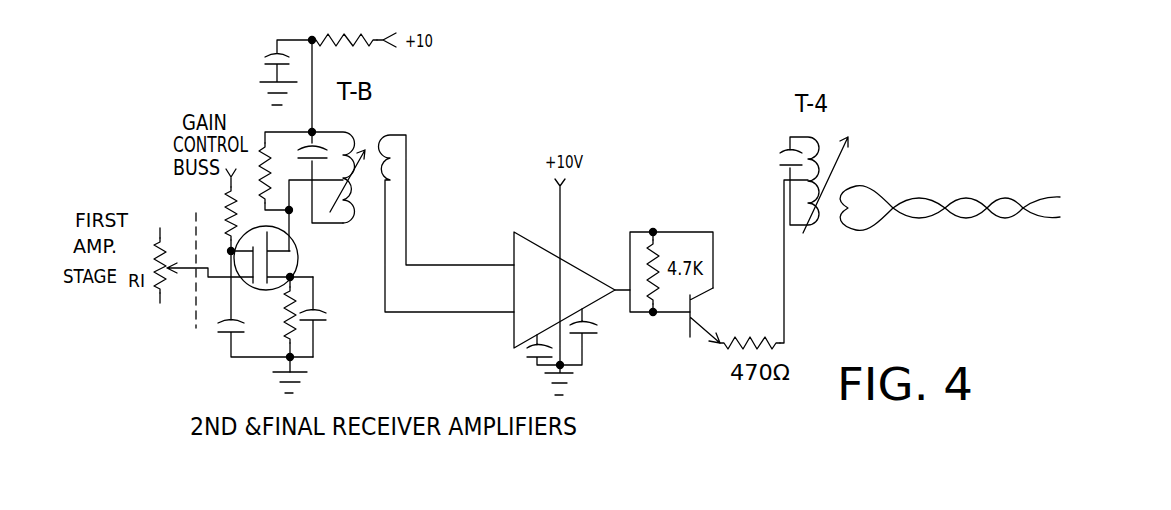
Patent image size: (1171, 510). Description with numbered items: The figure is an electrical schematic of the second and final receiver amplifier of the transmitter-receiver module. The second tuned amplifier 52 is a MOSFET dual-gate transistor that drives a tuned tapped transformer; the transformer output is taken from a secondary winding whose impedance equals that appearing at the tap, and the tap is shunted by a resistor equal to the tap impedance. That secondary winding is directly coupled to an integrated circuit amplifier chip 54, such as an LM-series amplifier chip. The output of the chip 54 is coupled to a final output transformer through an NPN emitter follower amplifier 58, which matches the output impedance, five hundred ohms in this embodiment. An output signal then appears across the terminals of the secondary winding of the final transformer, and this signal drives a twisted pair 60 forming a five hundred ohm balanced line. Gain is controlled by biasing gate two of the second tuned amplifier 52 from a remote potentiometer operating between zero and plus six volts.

The second tuned amplifier 52 is at (298, 253).
The integrated circuit amplifier chip 54 is at (570, 253).
The NPN emitter follower amplifier 58 is at (690, 316).
The twisted pair 60 is at (930, 198).